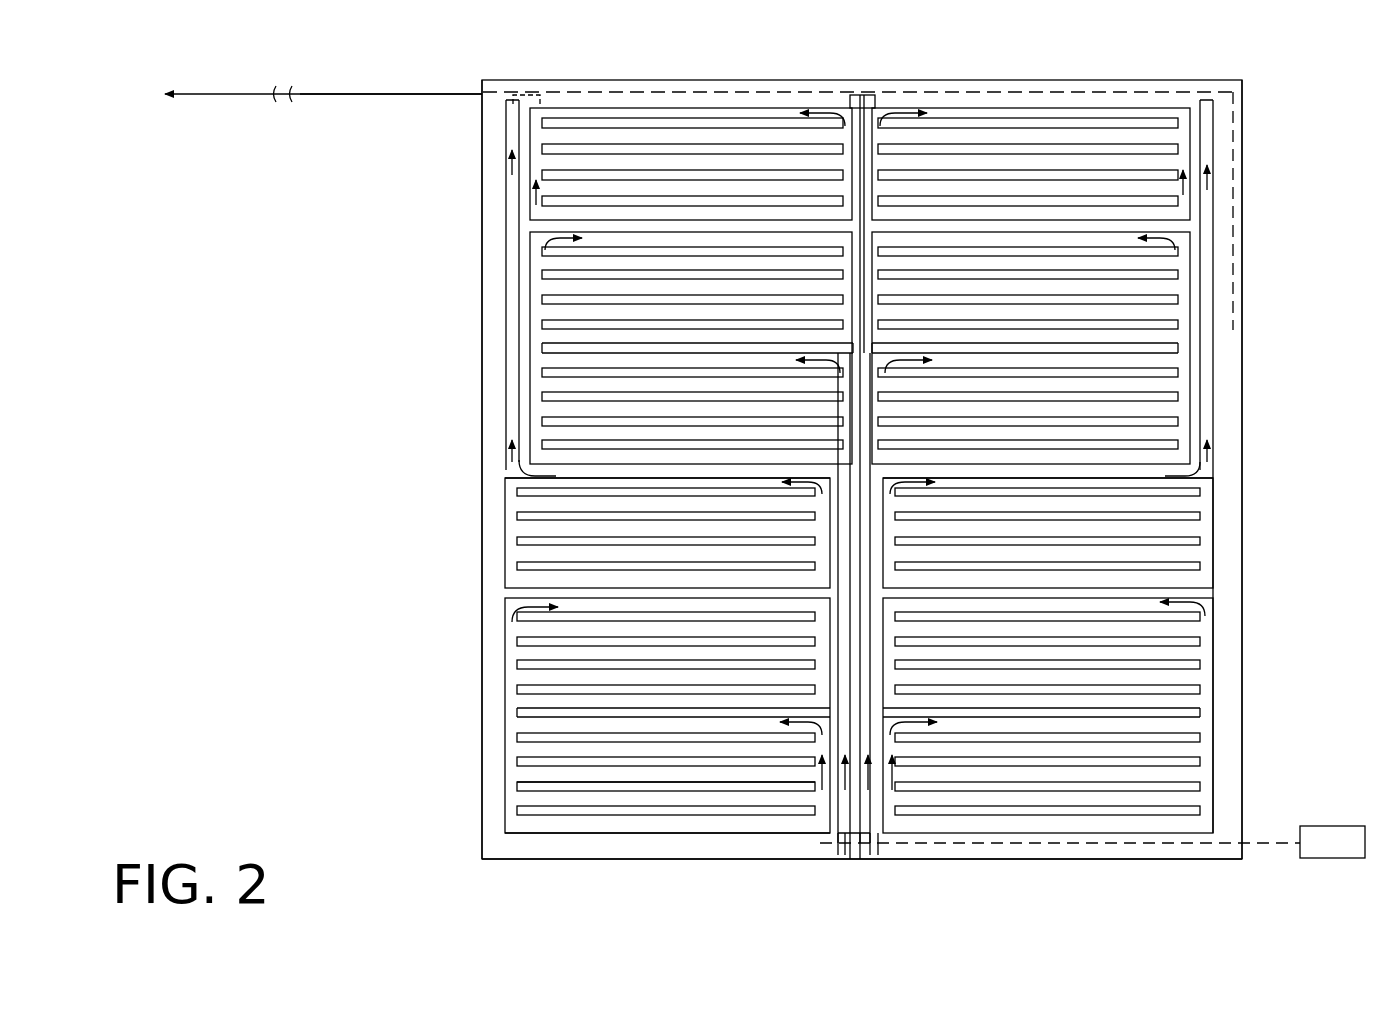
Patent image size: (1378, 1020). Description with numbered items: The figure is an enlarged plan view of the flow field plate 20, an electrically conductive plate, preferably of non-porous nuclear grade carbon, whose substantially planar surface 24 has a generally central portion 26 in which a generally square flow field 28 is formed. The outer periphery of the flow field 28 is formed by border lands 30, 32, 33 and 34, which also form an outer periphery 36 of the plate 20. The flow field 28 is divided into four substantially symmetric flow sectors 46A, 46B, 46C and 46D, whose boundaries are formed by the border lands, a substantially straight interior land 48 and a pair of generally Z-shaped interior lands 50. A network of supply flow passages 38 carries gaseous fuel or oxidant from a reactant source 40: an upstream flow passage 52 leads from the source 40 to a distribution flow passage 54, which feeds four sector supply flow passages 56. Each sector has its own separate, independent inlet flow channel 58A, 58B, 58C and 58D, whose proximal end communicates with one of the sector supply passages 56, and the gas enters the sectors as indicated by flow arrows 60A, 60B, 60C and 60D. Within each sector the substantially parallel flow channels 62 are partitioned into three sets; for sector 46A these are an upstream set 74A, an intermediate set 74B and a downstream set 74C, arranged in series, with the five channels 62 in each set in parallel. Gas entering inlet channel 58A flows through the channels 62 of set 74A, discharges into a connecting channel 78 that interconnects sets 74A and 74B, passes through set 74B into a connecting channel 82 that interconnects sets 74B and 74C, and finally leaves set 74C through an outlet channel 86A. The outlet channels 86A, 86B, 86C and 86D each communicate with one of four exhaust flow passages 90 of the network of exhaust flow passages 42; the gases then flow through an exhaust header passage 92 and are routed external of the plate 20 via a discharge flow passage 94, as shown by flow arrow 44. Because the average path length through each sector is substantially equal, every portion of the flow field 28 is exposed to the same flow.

The flow field plate 20 is at (1244, 140).
The substantially planar surface 24 is at (503, 130).
The generally central portion 26 is at (1228, 318).
The flow field 28 is at (1213, 283).
The border land 30 is at (482, 330).
The border land 32 is at (1243, 655).
The border land 33 is at (660, 848).
The border land 34 is at (1040, 82).
The outer periphery 36 is at (1244, 190).
The network of supply flow passages 38 is at (850, 852).
The reactant source 40 is at (1332, 842).
The network of exhaust flow passages 42 is at (858, 94).
The flow arrow 44 is at (228, 94).
The flow sector 46A is at (522, 656).
The flow sector 46B is at (547, 287).
The flow sector 46C is at (1178, 265).
The flow sector 46D is at (1188, 703).
The substantially straight interior land 48 is at (872, 106).
The generally Z-shaped interior land 50 is at (534, 479).
The upstream flow passage 52 is at (1275, 832).
The distribution flow passage 54 is at (868, 858).
The sector supply flow passage 56 is at (855, 860).
The inlet flow channel 58A is at (835, 843).
The inlet flow channel 58B is at (845, 850).
The inlet flow channel 58C is at (878, 850).
The inlet flow channel 58D is at (882, 843).
The flow arrow 60A is at (535, 192).
The flow arrow 60B is at (540, 222).
The flow arrow 60C is at (906, 110).
The flow arrow 60D is at (1186, 180).
The flow channel 62 is at (545, 389).
The upstream set of flow channels 74A is at (522, 838).
The intermediate set of flow channels 74B is at (522, 621).
The downstream set of flow channels 74C is at (520, 512).
The connecting channel 78 is at (515, 780).
The connecting channel 82 is at (822, 655).
The outlet channel 86A is at (510, 112).
The outlet channel 86B is at (515, 150).
The outlet channel 86C is at (1210, 126).
The outlet channel 86D is at (1215, 105).
The exhaust flow passage 90 is at (500, 100).
The exhaust header passage 92 is at (546, 92).
The discharge flow passage 94 is at (358, 94).